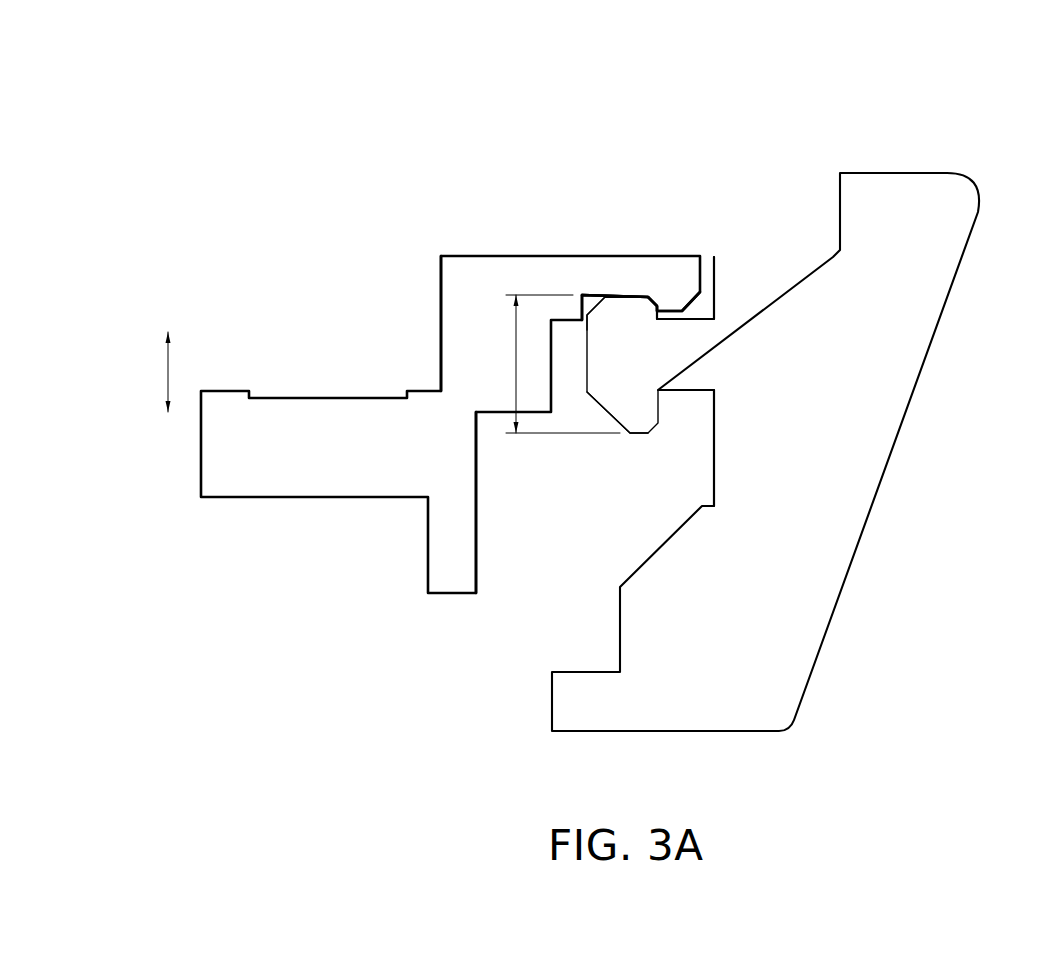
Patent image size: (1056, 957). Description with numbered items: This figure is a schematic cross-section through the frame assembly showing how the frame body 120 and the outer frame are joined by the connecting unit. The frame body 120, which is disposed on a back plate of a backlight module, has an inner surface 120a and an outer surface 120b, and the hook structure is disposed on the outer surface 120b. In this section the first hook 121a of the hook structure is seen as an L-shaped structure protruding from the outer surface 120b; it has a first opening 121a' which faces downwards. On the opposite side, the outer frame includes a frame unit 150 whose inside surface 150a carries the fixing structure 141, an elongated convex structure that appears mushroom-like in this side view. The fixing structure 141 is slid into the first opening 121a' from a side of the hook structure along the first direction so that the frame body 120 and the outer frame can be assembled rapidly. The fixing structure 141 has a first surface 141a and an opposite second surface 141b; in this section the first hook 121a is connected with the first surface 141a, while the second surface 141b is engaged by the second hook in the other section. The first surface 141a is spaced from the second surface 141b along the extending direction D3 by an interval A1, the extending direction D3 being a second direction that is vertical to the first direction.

The frame body 120 is at (478, 270).
The inner surface 120a is at (440, 313).
The outer surface 120b is at (477, 540).
The first hook 121a is at (621, 222).
The first opening 121a' is at (567, 183).
The fixing structure 141 is at (633, 355).
The first surface 141a is at (630, 293).
The second surface 141b is at (637, 435).
The frame unit 150 is at (810, 583).
The inside surface 150a is at (713, 427).
The interval A1 is at (546, 364).
The extending direction D3 is at (145, 372).